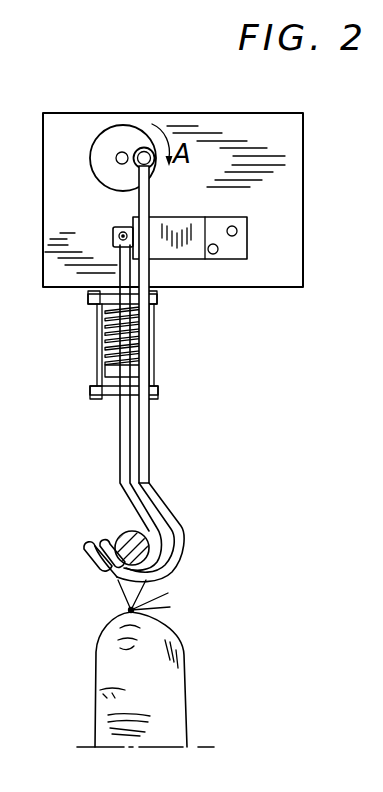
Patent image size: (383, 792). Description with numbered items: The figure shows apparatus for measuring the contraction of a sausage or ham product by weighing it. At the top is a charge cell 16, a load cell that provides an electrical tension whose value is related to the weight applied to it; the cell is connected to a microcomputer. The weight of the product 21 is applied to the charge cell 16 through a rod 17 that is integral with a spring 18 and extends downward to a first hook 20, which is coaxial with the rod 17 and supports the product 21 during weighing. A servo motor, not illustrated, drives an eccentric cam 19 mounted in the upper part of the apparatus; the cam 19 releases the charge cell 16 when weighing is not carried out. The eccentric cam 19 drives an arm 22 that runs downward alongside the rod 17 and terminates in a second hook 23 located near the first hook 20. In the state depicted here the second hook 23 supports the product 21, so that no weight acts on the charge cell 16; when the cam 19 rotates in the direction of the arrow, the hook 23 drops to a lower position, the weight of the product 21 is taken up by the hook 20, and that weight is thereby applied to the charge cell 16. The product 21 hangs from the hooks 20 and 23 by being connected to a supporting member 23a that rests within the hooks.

The charge cell 16 is at (233, 255).
The rod 17 is at (122, 263).
The spring 18 is at (108, 350).
The eccentric cam 19 is at (112, 135).
The first hook 20 is at (120, 474).
The product 21 is at (170, 670).
The arm 22 is at (148, 465).
The second hook 23 is at (182, 556).
The supporting member 23a is at (142, 536).